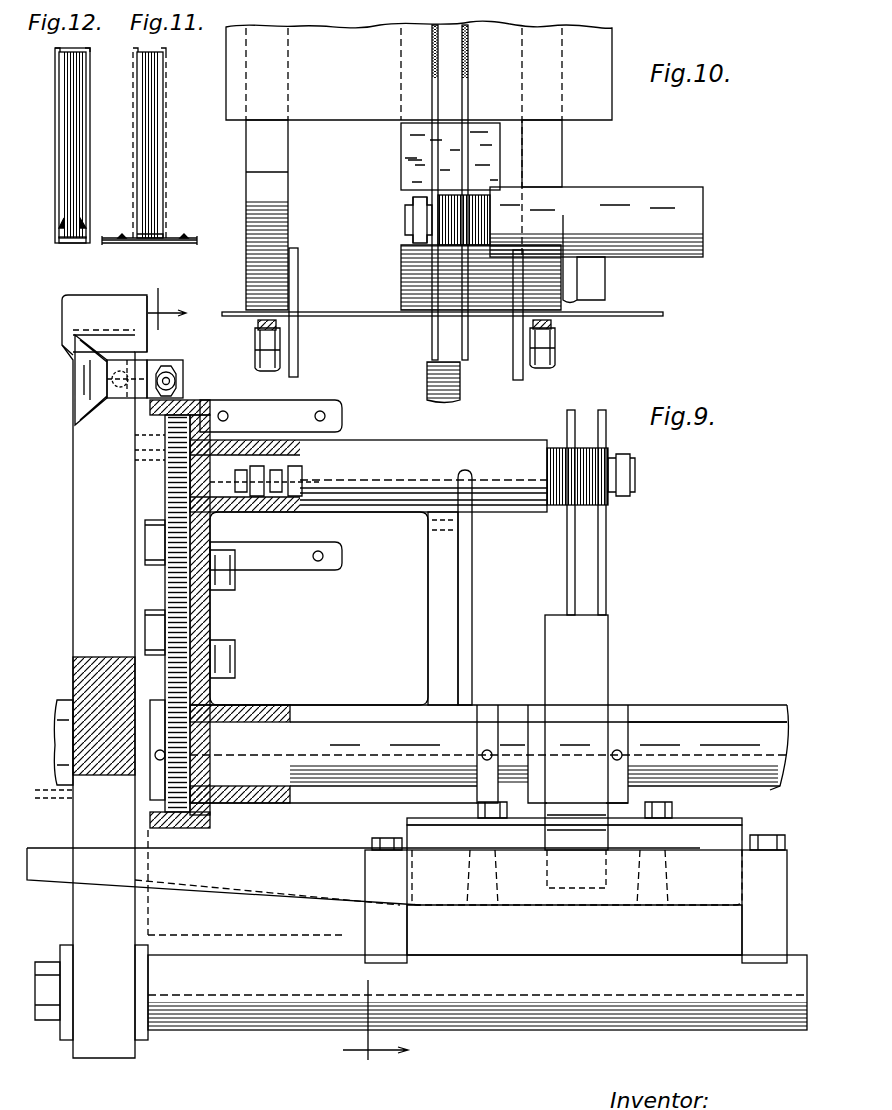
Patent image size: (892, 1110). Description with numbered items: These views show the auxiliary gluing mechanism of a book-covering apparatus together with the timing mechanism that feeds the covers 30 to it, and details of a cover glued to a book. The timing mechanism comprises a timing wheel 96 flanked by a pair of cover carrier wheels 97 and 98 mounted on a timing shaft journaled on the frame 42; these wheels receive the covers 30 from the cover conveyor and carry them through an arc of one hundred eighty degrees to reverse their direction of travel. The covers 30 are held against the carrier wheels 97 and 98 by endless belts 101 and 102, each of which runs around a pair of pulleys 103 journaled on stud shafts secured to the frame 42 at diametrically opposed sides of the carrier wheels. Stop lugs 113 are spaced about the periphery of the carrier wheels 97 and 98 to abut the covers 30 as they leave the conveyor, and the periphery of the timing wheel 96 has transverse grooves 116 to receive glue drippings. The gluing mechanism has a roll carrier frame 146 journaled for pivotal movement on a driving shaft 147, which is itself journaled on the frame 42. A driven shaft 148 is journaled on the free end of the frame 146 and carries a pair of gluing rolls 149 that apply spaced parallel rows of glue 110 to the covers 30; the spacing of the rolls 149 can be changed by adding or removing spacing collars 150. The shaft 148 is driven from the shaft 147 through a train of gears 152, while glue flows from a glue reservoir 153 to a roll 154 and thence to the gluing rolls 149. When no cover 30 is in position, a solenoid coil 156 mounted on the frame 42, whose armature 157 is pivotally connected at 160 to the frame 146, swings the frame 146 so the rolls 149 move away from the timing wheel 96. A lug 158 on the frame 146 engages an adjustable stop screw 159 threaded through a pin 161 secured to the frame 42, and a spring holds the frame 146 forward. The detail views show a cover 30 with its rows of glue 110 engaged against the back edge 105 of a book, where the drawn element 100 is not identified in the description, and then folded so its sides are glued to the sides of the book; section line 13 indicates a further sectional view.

In FIG. 9, the section line 13 is at (278, 677).
In FIG. 12, the cover 30 is at (55, 131).
In FIG. 11, the cover 30 is at (167, 167).
In FIG. 10, the cover 30 is at (595, 102).
In FIG. 9, the frame 42 is at (108, 1058).
In FIG. 10, the timing wheel 96 is at (405, 160).
In FIG. 10, the cover carrier wheel 97 is at (548, 151).
In FIG. 10, the cover carrier wheel 98 is at (288, 160).
In FIG. 12, the strip 100 is at (68, 164).
In FIG. 11, the strip 100 is at (150, 145).
In FIG. 10, the endless belt 101 is at (551, 331).
In FIG. 10, the endless belt 102 is at (258, 328).
In FIG. 10, the pulley 103 is at (255, 348).
In FIG. 12, the back edge 105 is at (68, 240).
In FIG. 11, the back edge 105 is at (147, 240).
In FIG. 12, the row of glue 110 is at (59, 222).
In FIG. 11, the row of glue 110 is at (123, 238).
In FIG. 10, the row of glue 110 is at (432, 52).
In FIG. 10, the stop lug 113 is at (298, 345).
In FIG. 10, the groove 116 is at (405, 137).
In FIG. 9, the roll carrier frame 146 is at (265, 705).
In FIG. 9, the driving shaft 147 is at (718, 725).
In FIG. 10, the driven shaft 148 is at (405, 214).
In FIG. 9, the driven shaft 148 is at (635, 475).
In FIG. 10, the gluing roll 149 is at (432, 333).
In FIG. 9, the gluing roll 149 is at (575, 560).
In FIG. 10, the spacing collar 150 is at (440, 250).
In FIG. 9, the spacing collar 150 is at (595, 507).
In FIG. 9, the train of gears 152 is at (165, 560).
In FIG. 9, the glue reservoir 153 is at (604, 905).
In FIG. 10, the roll 154 is at (427, 381).
In FIG. 9, the roll 154 is at (608, 665).
In FIG. 9, the solenoid coil 156 is at (305, 572).
In FIG. 9, the armature 157 is at (240, 472).
In FIG. 9, the lug 158 is at (157, 368).
In FIG. 9, the adjustable stop screw 159 is at (183, 386).
In FIG. 9, the pivotal connection 160 is at (300, 482).
In FIG. 9, the pin 161 is at (100, 380).